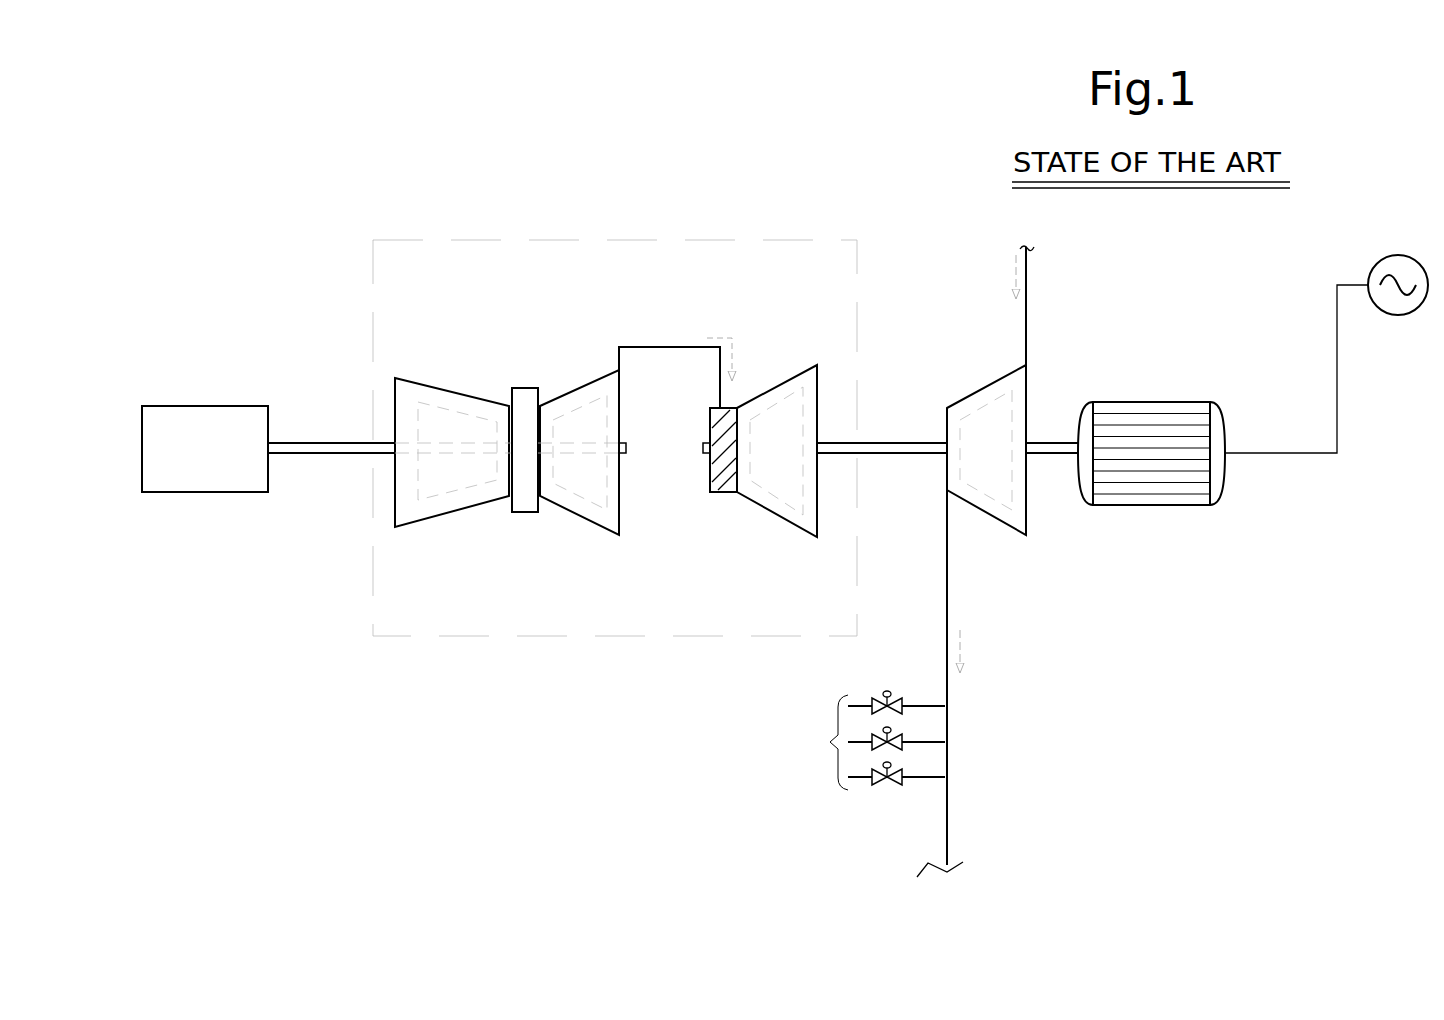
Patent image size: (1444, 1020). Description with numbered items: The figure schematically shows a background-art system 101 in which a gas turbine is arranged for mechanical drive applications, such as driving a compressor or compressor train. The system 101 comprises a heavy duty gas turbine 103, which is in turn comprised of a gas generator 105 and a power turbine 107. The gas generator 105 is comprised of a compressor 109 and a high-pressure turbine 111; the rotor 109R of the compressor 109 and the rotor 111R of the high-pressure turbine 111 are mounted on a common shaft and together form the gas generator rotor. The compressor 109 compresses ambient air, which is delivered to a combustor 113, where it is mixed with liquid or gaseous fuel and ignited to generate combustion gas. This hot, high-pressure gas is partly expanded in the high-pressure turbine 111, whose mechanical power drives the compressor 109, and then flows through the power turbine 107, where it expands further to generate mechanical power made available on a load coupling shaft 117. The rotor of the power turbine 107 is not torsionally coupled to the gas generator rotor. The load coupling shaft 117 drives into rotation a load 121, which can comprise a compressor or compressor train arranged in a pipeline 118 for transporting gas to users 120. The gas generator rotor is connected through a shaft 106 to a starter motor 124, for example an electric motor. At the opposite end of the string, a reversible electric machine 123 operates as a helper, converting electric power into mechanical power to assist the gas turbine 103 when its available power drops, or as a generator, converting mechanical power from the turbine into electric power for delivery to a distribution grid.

The system 101 is at (616, 724).
The heavy duty gas turbine 103 is at (470, 642).
The gas generator 105 is at (494, 344).
The shaft 106 is at (313, 443).
The power turbine 107 is at (786, 376).
The compressor 109 is at (465, 392).
The rotor of the compressor 109R is at (480, 512).
The high-pressure turbine 111 is at (580, 384).
The rotor of the high-pressure turbine 111R is at (580, 500).
The combustor 113 is at (527, 412).
The load coupling shaft 117 is at (893, 450).
The pipeline 118 is at (947, 600).
The users 120 is at (816, 741).
The load 121 is at (967, 393).
The reversible electric machine 123 is at (1175, 415).
The starter motor 124 is at (220, 425).